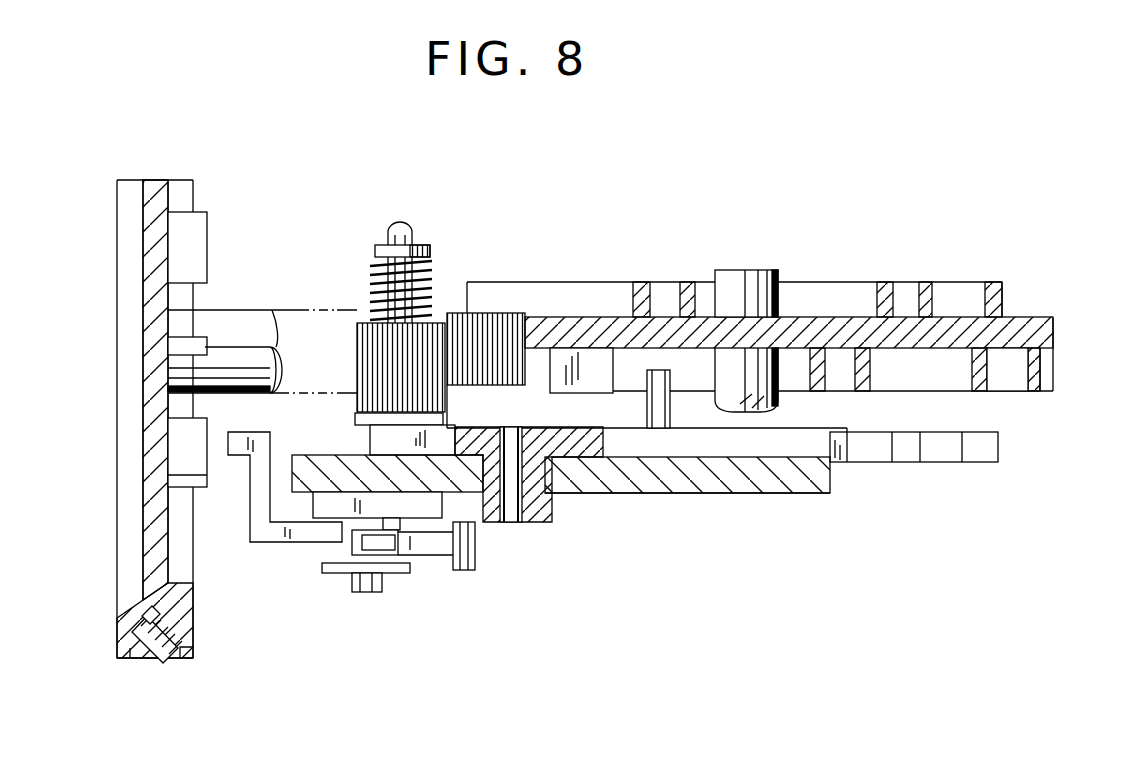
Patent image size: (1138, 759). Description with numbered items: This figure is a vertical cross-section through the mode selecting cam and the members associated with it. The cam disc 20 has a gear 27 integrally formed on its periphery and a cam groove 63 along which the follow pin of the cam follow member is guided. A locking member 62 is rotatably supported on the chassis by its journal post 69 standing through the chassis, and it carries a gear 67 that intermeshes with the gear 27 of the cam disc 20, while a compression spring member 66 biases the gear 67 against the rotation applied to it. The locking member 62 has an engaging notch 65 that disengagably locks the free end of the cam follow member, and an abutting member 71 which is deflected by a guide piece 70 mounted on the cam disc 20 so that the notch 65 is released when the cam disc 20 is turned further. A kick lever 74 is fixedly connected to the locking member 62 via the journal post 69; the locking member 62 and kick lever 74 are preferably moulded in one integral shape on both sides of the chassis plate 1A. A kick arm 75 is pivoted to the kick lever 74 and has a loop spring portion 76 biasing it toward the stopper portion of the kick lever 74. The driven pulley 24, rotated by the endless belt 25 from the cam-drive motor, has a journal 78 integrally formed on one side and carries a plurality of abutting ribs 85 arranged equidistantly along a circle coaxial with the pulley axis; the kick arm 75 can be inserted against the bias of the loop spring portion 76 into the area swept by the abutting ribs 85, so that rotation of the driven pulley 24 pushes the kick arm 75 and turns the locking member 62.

The chassis plate 1A is at (743, 480).
The cam disc 20 is at (818, 328).
The driven pulley 24 is at (183, 617).
The endless belt 25 is at (157, 664).
The gear 27 is at (450, 313).
The locking member 62 is at (857, 443).
The cam groove 63 is at (1007, 367).
The engaging notch 65 is at (938, 443).
The compression spring member 66 is at (380, 268).
The gear 67 is at (358, 333).
The journal post 69 is at (513, 523).
The guide piece 70 is at (562, 327).
The abutting member 71 is at (670, 412).
The kick lever 74 is at (553, 510).
The kick arm 75 is at (265, 535).
The loop spring portion 76 is at (425, 547).
The journal 78 is at (247, 330).
The abutting ribs 85 is at (185, 337).